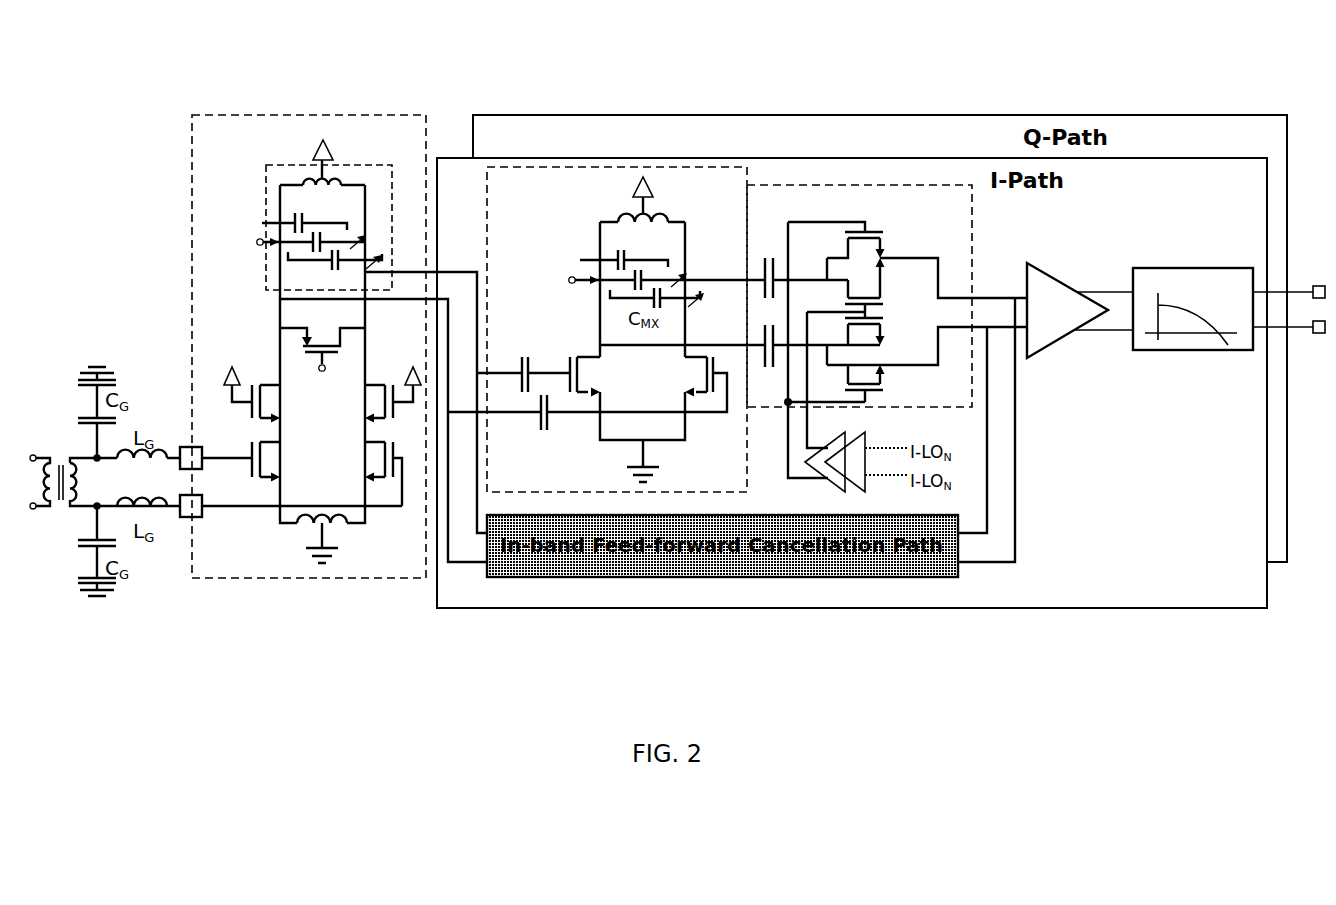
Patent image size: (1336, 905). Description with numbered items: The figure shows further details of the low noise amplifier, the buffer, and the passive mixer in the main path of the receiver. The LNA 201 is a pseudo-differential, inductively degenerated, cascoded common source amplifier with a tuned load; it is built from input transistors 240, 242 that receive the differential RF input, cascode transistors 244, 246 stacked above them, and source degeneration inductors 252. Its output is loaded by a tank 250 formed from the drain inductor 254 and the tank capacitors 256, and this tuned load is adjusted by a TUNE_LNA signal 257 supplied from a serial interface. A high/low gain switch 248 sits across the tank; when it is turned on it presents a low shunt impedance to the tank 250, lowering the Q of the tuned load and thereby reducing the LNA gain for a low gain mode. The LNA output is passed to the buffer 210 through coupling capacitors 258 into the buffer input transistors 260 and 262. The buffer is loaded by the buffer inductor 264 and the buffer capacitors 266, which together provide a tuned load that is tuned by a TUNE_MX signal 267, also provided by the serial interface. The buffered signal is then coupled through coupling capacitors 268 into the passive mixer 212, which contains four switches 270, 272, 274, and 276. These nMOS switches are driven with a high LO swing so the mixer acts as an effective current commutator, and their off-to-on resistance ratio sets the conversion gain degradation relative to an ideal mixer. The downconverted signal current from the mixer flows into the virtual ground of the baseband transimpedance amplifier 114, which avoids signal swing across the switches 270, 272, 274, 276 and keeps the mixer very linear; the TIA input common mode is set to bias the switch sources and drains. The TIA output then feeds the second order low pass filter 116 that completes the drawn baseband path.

The LNA 201 is at (373, 116).
The inductor L_D 254 is at (302, 176).
The tank 250 is at (261, 212).
The capacitors C_D 256 is at (266, 222).
The TUNE_LNA signal 257 is at (192, 237).
The high/low gain switch 248 is at (298, 347).
The cascode transistor 244 is at (273, 362).
The cascode transistor 246 is at (381, 385).
The input transistor 240 is at (255, 480).
The input transistor 242 is at (385, 480).
The inductor L_S 252 is at (297, 533).
The buffer 210 is at (677, 168).
The TUNE_MX signal 267 is at (510, 268).
The capacitors C_MX 266 is at (582, 258).
The inductor L_MX 264 is at (670, 212).
The coupling capacitors 268 is at (760, 262).
The coupling capacitors C_C 258 is at (533, 363).
The input transistor M_6 260 is at (577, 398).
The input transistor M_7 262 is at (705, 398).
The passive mixer 212 is at (902, 184).
The switch M_11 276 is at (888, 235).
The switch M_10 274 is at (887, 300).
The switch M_9 272 is at (922, 365).
The switch M_8 270 is at (888, 388).
The transimpedance amplifier (TIA) 114 is at (1068, 337).
The low pass filter 116 is at (1180, 263).